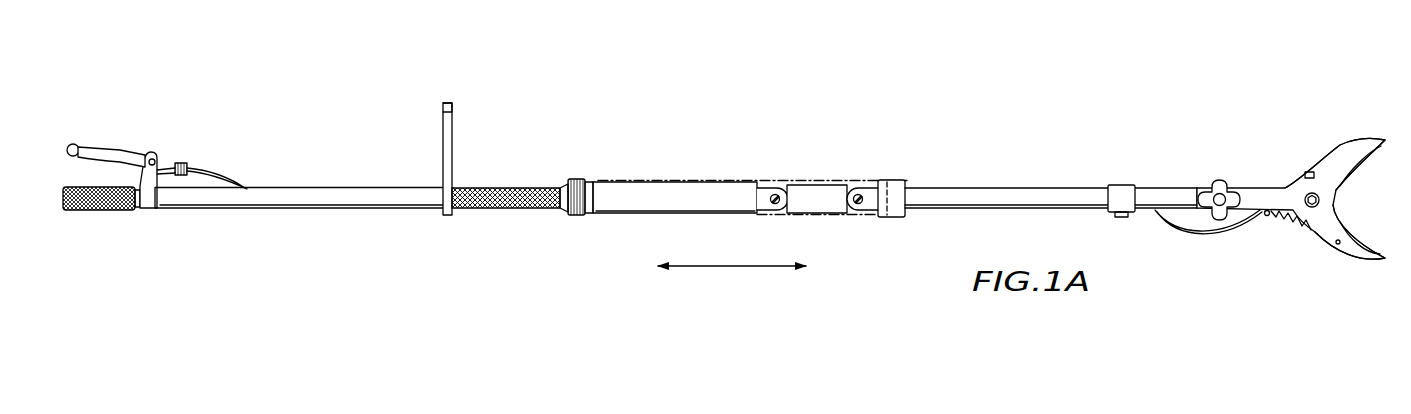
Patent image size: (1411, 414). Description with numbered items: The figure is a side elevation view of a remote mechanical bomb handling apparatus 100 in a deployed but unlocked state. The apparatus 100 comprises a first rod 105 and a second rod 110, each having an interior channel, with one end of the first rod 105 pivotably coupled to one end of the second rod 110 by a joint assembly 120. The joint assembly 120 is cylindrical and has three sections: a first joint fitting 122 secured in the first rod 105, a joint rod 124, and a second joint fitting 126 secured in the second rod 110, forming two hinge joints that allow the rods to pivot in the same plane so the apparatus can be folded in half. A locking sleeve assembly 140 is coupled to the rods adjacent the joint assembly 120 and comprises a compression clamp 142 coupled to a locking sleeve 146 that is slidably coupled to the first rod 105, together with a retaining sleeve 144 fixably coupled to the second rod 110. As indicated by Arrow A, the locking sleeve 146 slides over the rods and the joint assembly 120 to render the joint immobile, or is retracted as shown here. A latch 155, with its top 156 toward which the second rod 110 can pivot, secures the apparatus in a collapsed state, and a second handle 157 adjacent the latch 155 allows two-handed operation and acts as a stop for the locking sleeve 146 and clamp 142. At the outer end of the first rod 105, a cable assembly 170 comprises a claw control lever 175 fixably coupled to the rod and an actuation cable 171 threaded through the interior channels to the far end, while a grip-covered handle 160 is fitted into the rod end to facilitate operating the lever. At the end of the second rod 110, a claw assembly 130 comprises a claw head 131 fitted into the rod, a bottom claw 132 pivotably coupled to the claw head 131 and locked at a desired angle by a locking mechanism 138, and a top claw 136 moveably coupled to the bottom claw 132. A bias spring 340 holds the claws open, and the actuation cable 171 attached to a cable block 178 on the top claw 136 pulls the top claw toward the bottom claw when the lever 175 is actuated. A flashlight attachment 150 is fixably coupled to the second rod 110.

The apparatus 100 is at (360, 234).
The first rod 105 is at (325, 197).
The second rod 110 is at (955, 190).
The joint assembly 120 is at (823, 229).
The first joint fitting 122 is at (782, 213).
The joint rod 124 is at (807, 190).
The second joint fitting 126 is at (867, 207).
The claw assembly 130 is at (1260, 232).
The claw head 131 is at (1210, 190).
The bottom claw 132 is at (1340, 147).
The top claw 136 is at (1343, 253).
The locking mechanism 138 is at (1218, 178).
The locking sleeve assembly 140 is at (655, 170).
The compression clamp 142 is at (575, 178).
The retaining sleeve 144 is at (895, 183).
The locking sleeve 146 is at (697, 182).
The flashlight attachment 150 is at (1120, 187).
The latch 155 is at (442, 120).
The top of the latch 156 is at (450, 103).
The second handle 157 is at (500, 210).
The handle 160 is at (100, 212).
The cable assembly 170 is at (162, 127).
The actuation cable 171 is at (207, 170).
The claw control lever 175 is at (102, 155).
The cable block 178 is at (1308, 173).
The bias spring 340 is at (1293, 227).
The Arrow A is at (730, 267).